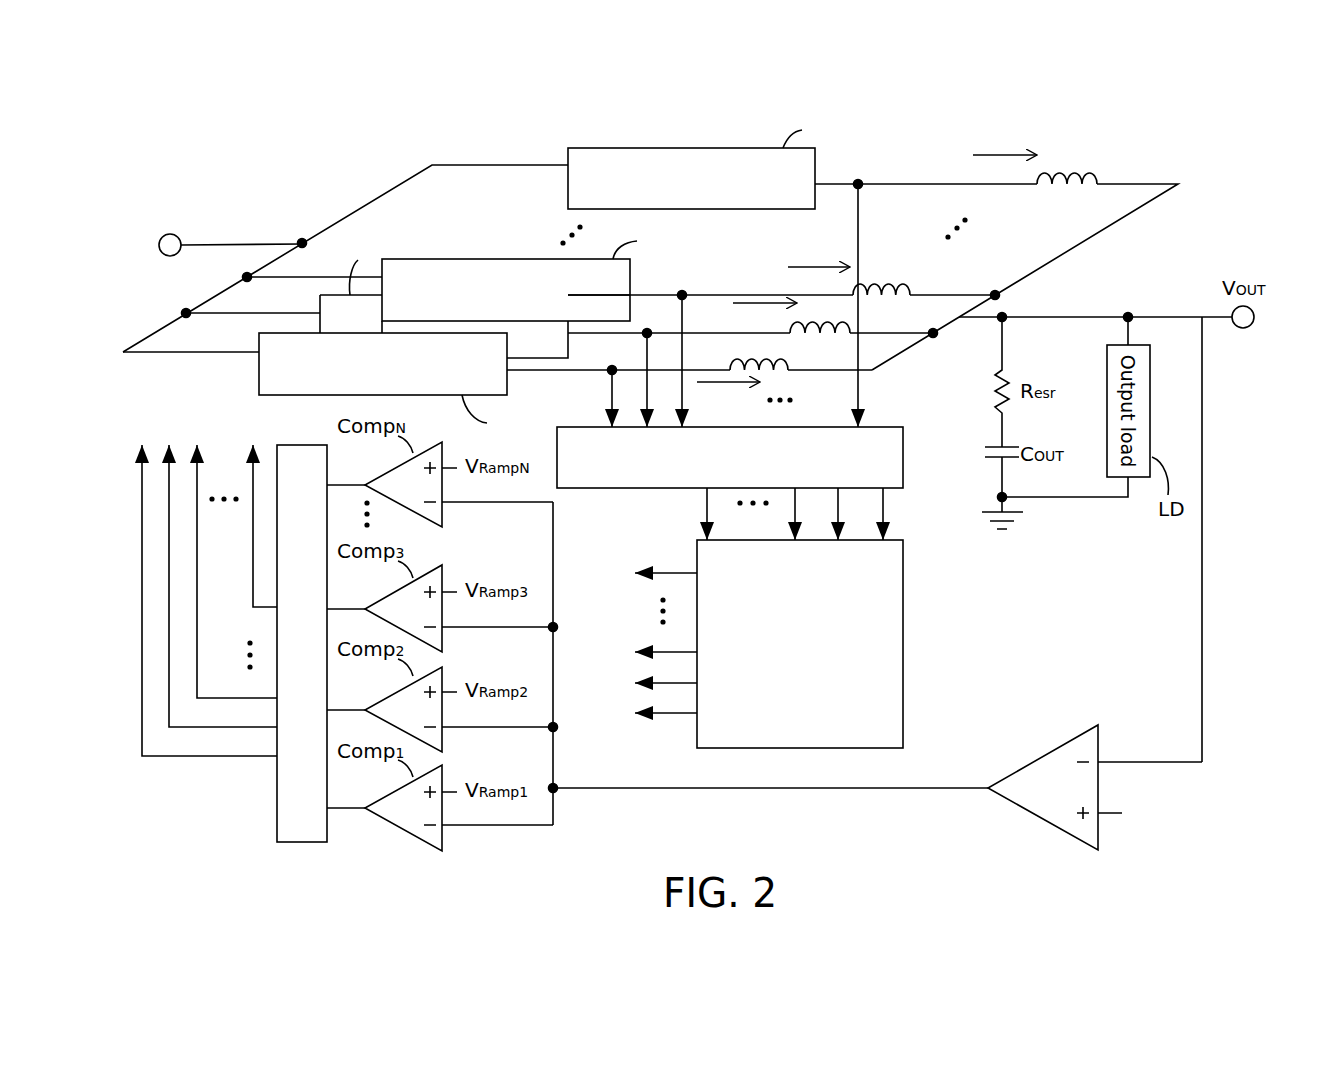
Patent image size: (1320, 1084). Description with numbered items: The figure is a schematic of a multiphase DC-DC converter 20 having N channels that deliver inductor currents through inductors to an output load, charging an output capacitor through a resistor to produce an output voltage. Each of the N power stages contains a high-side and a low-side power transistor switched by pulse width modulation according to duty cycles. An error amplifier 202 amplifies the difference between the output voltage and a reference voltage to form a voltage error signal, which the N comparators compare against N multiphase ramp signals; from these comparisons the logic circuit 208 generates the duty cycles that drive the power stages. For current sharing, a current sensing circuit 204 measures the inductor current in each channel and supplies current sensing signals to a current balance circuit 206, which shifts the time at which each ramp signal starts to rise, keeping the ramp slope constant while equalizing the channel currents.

The multiphase DC-DC converter 20 is at (1170, 155).
The error amplifier 202 is at (1043, 755).
The current sensing circuit 204 is at (890, 427).
The current balance circuit 206 is at (903, 582).
The logic circuit 208 is at (303, 842).